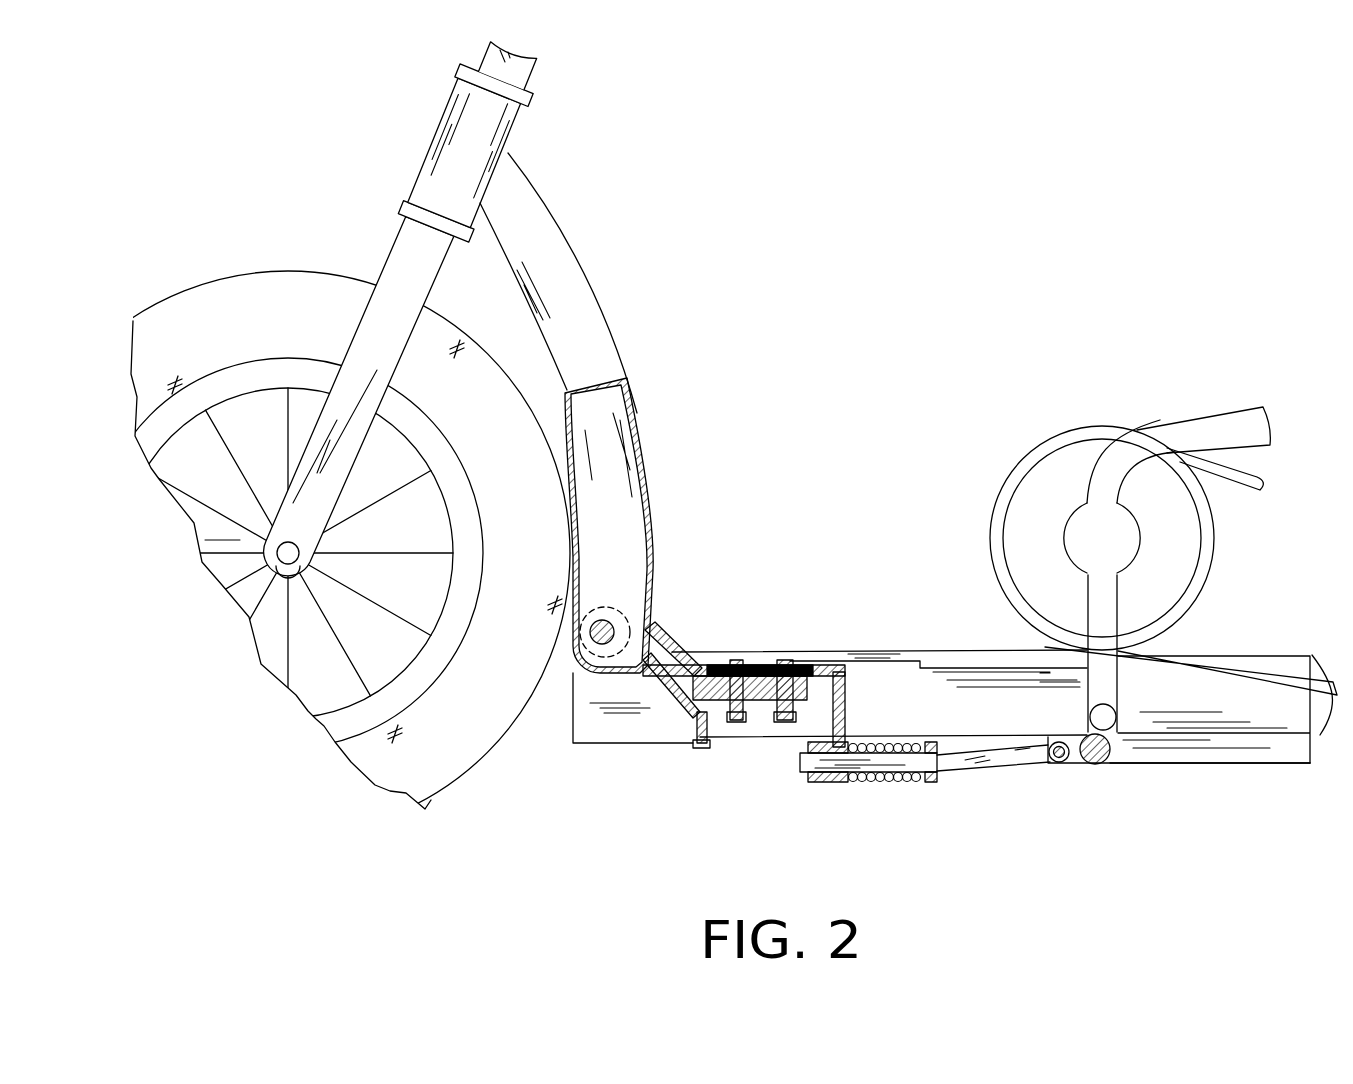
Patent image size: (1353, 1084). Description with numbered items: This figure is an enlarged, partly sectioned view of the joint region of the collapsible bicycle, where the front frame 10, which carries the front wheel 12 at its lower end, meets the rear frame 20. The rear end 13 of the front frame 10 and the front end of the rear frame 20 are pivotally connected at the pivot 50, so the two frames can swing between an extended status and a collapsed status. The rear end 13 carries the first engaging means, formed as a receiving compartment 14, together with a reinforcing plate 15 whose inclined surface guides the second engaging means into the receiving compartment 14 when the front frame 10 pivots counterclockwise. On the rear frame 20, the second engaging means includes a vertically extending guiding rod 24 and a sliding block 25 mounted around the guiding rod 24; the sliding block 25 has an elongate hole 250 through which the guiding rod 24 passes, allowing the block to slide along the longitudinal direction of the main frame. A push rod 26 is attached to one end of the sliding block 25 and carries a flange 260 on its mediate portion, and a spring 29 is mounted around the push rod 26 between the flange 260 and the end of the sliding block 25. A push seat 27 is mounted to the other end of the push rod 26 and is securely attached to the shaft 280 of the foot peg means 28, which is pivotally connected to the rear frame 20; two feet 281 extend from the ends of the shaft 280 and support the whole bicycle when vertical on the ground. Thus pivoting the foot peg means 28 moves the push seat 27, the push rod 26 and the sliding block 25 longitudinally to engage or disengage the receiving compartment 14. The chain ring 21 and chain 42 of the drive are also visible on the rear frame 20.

The front frame 10 is at (498, 148).
The front wheel 12 is at (318, 293).
The rear end of the front frame 13 is at (650, 638).
The receiving compartment 14 is at (672, 690).
The reinforcing plate 15 is at (675, 655).
The rear frame 20 is at (883, 647).
The chain ring 21 is at (1040, 483).
The guiding rod 24 is at (735, 723).
The sliding block 25 is at (833, 657).
The elongate hole 250 is at (810, 657).
The push rod 26 is at (965, 762).
The flange 260 is at (932, 773).
The push seat 27 is at (1080, 760).
The foot peg means 28 is at (1153, 775).
The shaft 280 is at (1107, 763).
The feet 281 is at (1190, 753).
The spring 29 is at (892, 773).
The chain 42 is at (1247, 463).
The pivotal connection 50 is at (608, 623).